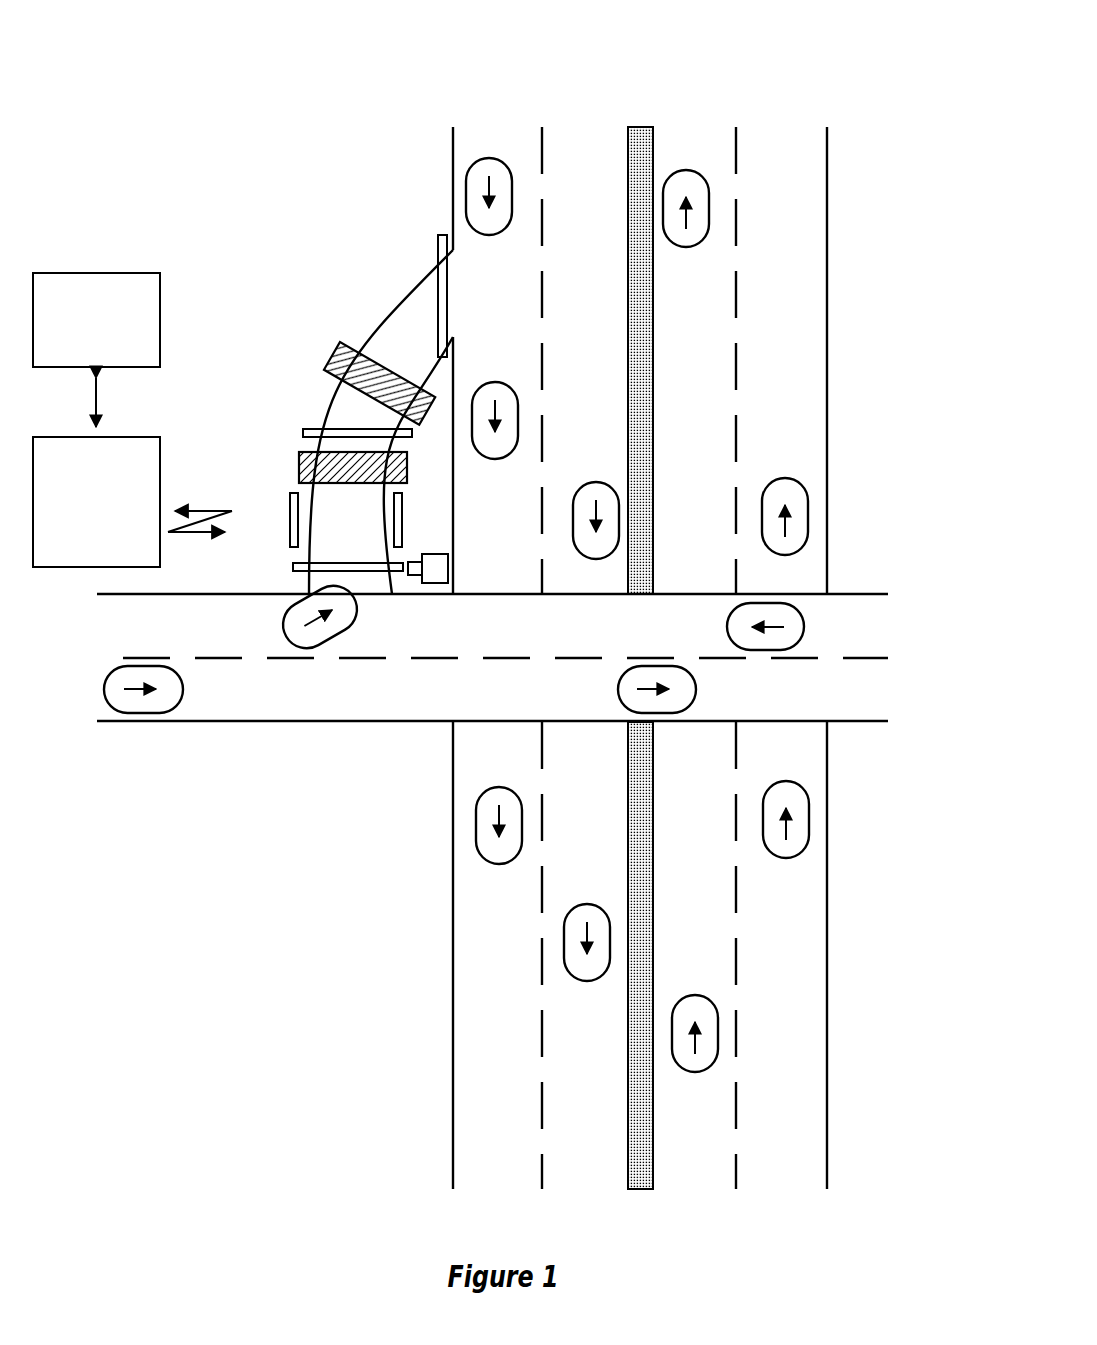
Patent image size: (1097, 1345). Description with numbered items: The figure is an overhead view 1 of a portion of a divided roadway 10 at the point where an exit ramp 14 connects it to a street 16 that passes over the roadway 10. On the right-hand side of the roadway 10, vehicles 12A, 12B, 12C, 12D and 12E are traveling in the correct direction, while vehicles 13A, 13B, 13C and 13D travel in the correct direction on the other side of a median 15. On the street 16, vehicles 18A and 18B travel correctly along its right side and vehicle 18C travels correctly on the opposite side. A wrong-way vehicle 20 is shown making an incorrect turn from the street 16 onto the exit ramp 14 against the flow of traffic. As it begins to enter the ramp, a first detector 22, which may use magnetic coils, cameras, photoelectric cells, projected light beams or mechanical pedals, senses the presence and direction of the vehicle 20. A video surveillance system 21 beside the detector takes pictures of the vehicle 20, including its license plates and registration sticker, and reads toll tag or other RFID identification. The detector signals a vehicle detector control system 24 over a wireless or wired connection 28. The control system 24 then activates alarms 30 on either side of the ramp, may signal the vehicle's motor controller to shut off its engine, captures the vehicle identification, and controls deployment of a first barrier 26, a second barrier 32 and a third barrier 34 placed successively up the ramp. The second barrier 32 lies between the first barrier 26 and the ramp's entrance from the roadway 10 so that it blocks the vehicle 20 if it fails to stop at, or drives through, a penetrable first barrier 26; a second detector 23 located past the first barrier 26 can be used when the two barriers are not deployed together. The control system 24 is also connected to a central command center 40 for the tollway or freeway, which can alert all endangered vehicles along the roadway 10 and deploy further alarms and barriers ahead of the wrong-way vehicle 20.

The overhead view 1 is at (104, 48).
The roadway 10 is at (640, 658).
The vehicle 12A is at (597, 482).
The vehicle 12B is at (496, 374).
The vehicle 12C is at (488, 158).
The vehicle 12D is at (501, 787).
The vehicle 12E is at (586, 904).
The vehicle 13A is at (786, 477).
The vehicle 13B is at (687, 170).
The vehicle 13C is at (696, 995).
The vehicle 13D is at (787, 780).
The exit ramp 14 is at (381, 422).
The median 15 is at (640, 127).
The street 16 is at (492, 657).
The vehicle 18A is at (103, 689).
The vehicle 18B is at (617, 689).
The vehicle 18C is at (725, 627).
The wrong-way vehicle 20 is at (282, 622).
The video surveillance system 21 is at (428, 568).
The first detector 22 is at (294, 567).
The second detector 23 is at (312, 430).
The vehicle detector control system 24 is at (96, 472).
The first barrier 26 is at (298, 471).
The wireless or wired connection 28 is at (200, 507).
The alarms 30 is at (291, 524).
The second barrier 32 is at (334, 358).
The third barrier 34 is at (441, 239).
The central command center 40 is at (96, 320).